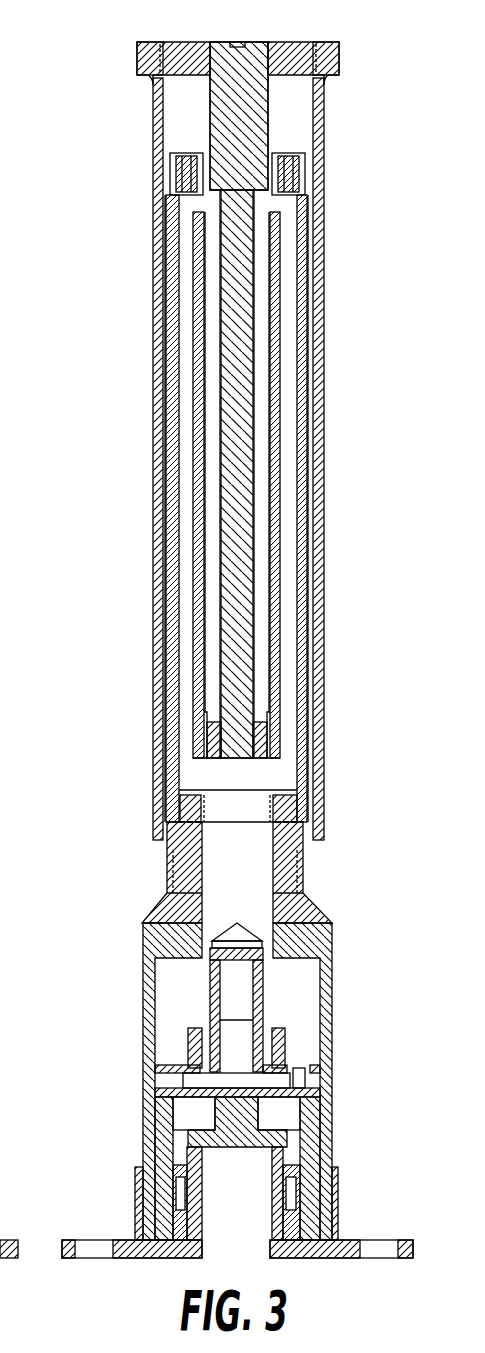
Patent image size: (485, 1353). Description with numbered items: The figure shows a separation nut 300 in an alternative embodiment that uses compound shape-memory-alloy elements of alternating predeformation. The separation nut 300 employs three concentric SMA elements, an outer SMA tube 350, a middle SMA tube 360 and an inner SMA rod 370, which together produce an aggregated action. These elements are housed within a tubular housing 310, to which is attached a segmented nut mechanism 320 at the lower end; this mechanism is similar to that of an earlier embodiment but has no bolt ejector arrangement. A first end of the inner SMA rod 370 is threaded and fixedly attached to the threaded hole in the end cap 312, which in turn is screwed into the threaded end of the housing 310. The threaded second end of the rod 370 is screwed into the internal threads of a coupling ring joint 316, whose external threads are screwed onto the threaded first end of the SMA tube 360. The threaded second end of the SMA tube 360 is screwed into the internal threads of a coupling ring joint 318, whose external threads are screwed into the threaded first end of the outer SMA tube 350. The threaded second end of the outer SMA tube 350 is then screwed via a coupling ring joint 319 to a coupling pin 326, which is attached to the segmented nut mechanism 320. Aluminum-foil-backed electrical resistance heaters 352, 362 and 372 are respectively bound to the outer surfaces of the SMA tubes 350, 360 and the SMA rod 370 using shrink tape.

The separation nut 300 is at (112, 138).
The tubular housing 310 is at (322, 275).
The end cap 312 is at (278, 42).
The coupling ring joint 316 is at (258, 758).
The coupling ring joint 318 is at (282, 157).
The coupling ring joint 319 is at (293, 800).
The segmented nut mechanism 320 is at (62, 947).
The coupling pin 326 is at (257, 875).
The outer SMA tube 350 is at (302, 465).
The electrical resistance heater 352 is at (310, 420).
The SMA tube 360 is at (275, 553).
The electrical resistance heater 362 is at (280, 515).
The inner SMA rod 370 is at (238, 657).
The electrical resistance heater 372 is at (255, 610).